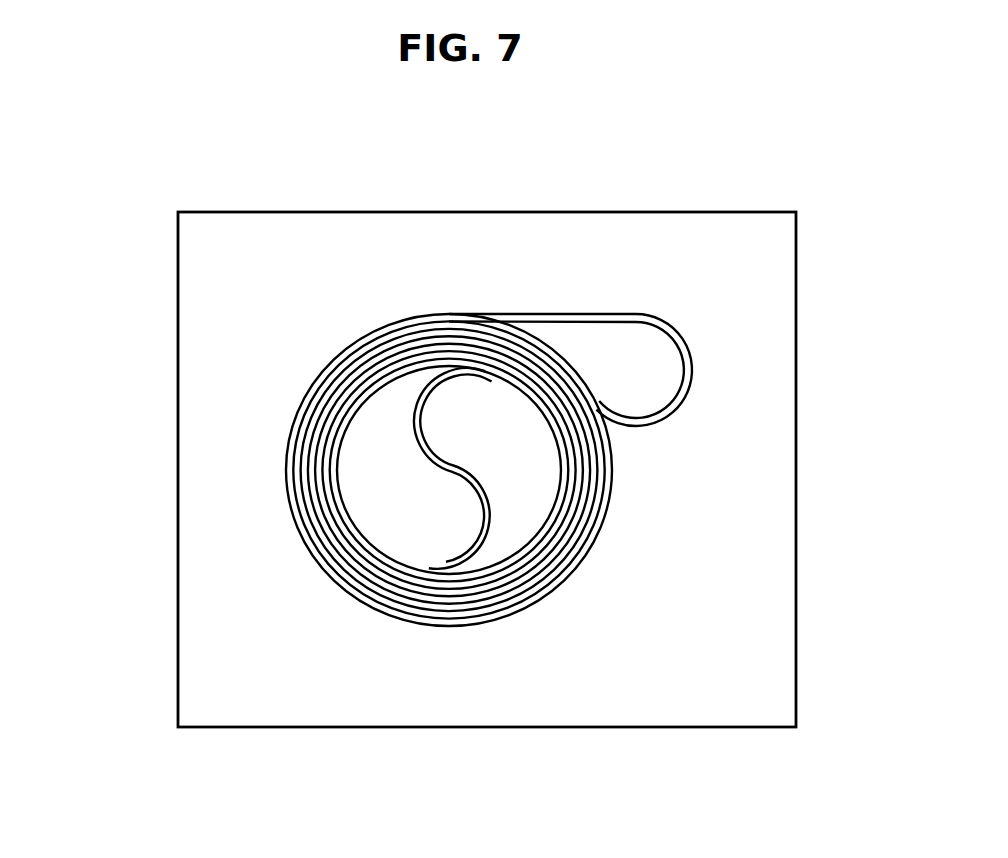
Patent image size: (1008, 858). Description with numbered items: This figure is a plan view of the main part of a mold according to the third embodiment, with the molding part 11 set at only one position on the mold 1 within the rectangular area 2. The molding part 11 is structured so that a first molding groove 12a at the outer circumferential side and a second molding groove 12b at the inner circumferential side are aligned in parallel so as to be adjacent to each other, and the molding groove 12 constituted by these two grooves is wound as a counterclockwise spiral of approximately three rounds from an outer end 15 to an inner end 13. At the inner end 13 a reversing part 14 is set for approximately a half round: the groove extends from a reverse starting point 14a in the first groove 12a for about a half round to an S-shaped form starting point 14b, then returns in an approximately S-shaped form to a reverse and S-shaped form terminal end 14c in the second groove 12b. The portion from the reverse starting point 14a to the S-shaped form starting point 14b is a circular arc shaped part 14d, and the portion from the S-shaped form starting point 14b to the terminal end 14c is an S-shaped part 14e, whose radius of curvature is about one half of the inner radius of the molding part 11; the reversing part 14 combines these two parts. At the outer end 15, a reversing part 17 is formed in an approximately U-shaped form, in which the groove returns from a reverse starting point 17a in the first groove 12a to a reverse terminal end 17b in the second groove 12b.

The coil antenna component (1A variant) 1 is at (238, 211).
The base substrate 2 is at (753, 225).
The molding part 11 is at (285, 518).
The molding groove 12 is at (98, 272).
The first molding groove 12a is at (303, 403).
The second molding groove 12b is at (303, 425).
The inner end 13 is at (512, 372).
The reversing part 14 is at (475, 555).
The reverse starting point 14a is at (484, 374).
The S-shaped form starting point 14b is at (413, 570).
The reverse and S-shaped form terminal end 14c is at (494, 382).
The circular arc shaped part 14d is at (356, 410).
The S-shaped part 14e is at (473, 480).
The outer end 15 is at (448, 312).
The reversing part 17 is at (683, 392).
The reverse starting point 17a is at (465, 313).
The reverse terminal end 17b is at (482, 322).